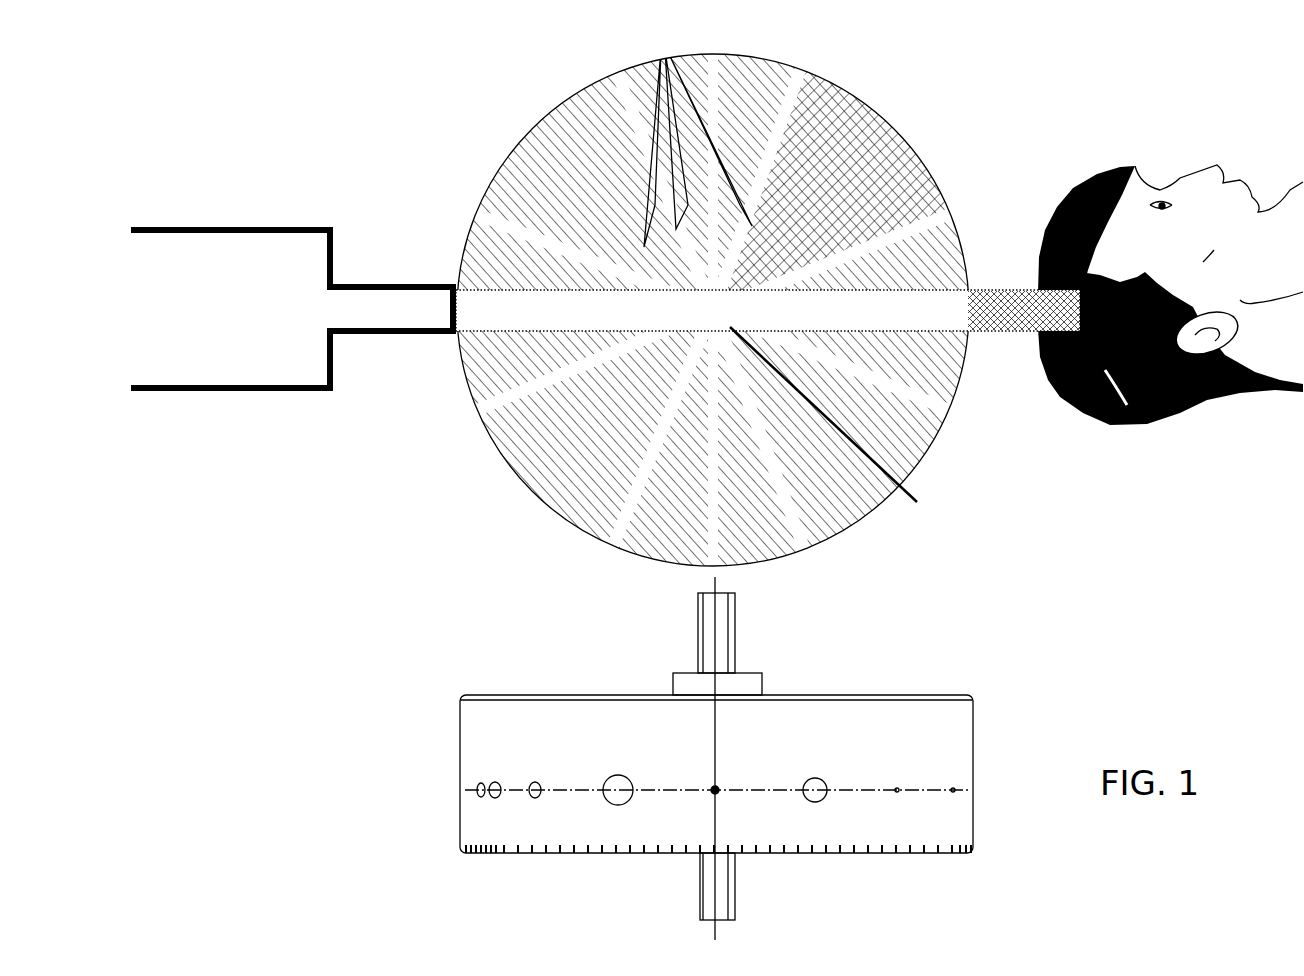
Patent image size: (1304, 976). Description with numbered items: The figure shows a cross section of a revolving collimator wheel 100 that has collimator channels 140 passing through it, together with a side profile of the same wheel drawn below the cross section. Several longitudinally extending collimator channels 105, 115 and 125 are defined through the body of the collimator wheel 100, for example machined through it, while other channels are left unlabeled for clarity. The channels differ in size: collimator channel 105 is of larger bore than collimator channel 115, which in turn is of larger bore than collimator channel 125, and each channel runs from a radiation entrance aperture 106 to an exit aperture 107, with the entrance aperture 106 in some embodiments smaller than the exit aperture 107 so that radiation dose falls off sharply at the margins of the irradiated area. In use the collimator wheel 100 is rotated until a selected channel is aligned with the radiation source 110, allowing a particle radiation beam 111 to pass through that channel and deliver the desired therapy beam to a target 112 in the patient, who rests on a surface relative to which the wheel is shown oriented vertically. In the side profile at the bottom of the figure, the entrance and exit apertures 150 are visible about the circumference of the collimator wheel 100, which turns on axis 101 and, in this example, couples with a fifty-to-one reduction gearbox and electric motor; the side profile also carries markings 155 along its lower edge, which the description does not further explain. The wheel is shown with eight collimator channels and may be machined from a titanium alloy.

The revolving collimator wheel 100 is at (517, 728).
The axis 101 is at (722, 607).
The collimator channel 105 is at (638, 128).
The radiation entrance aperture 106 is at (810, 547).
The exit aperture 107 is at (612, 70).
The radiation source 110 is at (386, 330).
The particle radiation beam 111 is at (845, 312).
The target 112 is at (1100, 258).
The collimator channel 115 is at (787, 133).
The collimator channel 125 is at (833, 193).
The collimator channels 140 is at (750, 225).
The entrance and exit apertures 150 is at (822, 783).
The scale graduations 155 is at (805, 856).